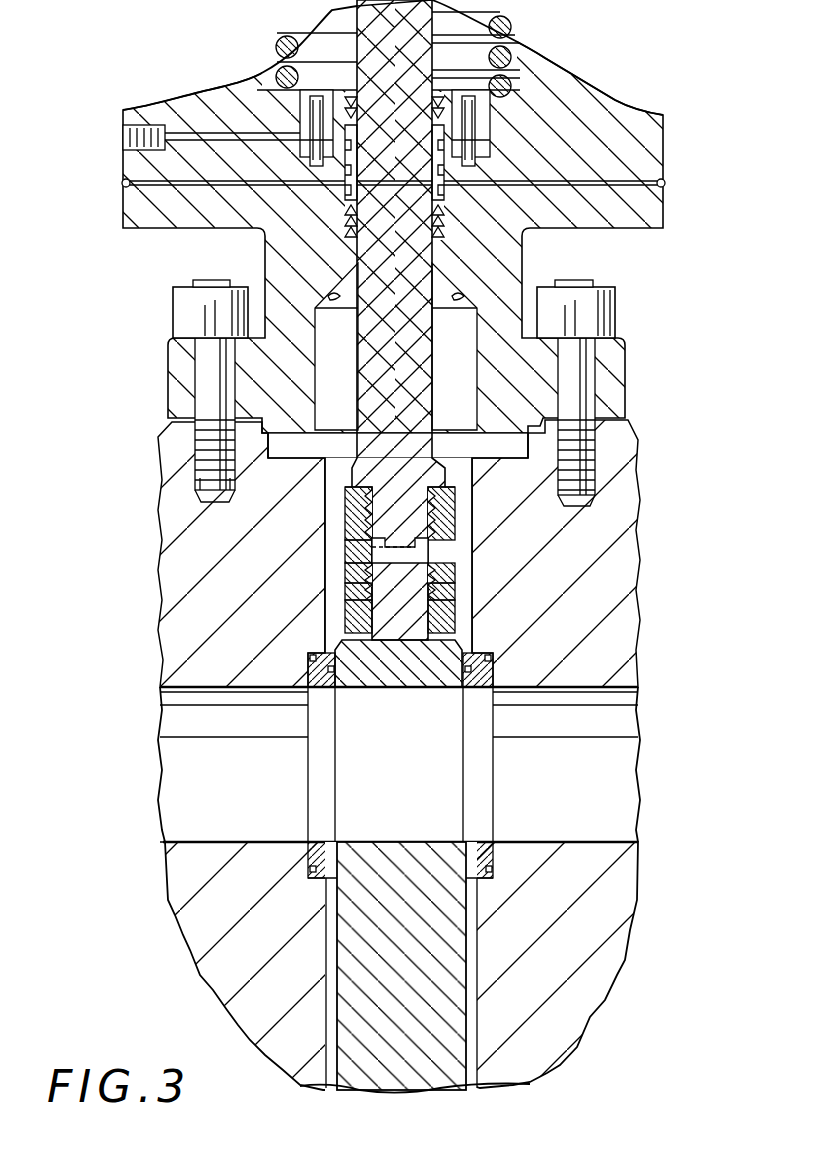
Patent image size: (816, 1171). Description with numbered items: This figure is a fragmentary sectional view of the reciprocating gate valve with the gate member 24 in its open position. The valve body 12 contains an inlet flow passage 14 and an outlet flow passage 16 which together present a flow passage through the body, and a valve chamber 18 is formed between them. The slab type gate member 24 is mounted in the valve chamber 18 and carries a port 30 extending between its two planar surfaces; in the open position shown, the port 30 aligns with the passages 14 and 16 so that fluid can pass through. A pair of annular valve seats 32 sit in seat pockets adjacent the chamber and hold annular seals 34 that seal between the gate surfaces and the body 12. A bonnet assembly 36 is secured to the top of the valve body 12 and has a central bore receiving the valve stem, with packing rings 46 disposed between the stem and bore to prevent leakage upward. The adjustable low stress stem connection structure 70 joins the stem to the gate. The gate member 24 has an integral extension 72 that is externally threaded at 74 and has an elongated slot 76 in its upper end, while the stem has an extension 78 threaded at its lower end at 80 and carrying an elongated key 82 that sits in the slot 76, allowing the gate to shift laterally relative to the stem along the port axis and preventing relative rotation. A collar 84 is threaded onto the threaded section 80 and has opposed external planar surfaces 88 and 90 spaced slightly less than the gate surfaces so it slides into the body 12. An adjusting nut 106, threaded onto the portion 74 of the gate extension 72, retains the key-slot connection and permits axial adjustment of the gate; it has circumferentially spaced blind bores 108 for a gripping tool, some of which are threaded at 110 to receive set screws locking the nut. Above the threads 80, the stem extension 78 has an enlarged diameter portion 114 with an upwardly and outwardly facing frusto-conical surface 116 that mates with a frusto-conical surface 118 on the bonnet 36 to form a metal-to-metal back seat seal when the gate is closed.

The valve body 12 is at (232, 950).
The inlet flow passage 14 is at (562, 784).
The outlet flow passage 16 is at (240, 784).
The valve chamber 18 is at (345, 369).
The gate member 24 is at (440, 923).
The port 30 is at (412, 784).
The valve seats 32 is at (492, 671).
The annular seals 34 is at (331, 669).
The bonnet assembly 36 is at (490, 262).
The packing rings 46 is at (470, 98).
The stem connection structure 70 is at (268, 530).
The gate member extension 72 is at (403, 637).
The externally threaded portion 74 is at (453, 589).
The elongated slot 76 is at (425, 547).
The stem extension 78 is at (442, 484).
The externally threaded section 80 is at (345, 514).
The elongated key 82 is at (352, 551).
The collar 84 is at (455, 497).
The external planar surface 88 is at (345, 620).
The external planar surface 90 is at (450, 620).
The adjusting nut 106 is at (350, 593).
The blind bores 108 is at (350, 572).
The internally threaded bores 110 is at (443, 568).
The enlarged diameter portion 114 is at (397, 472).
The frusto-conical surface 116 is at (337, 452).
The mating frusto-conical surface 118 is at (335, 291).